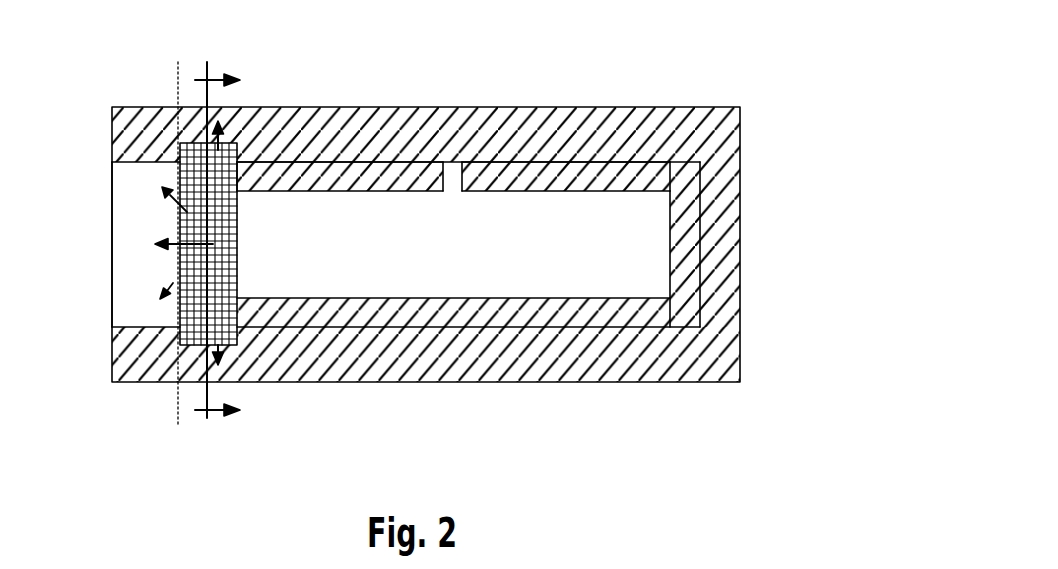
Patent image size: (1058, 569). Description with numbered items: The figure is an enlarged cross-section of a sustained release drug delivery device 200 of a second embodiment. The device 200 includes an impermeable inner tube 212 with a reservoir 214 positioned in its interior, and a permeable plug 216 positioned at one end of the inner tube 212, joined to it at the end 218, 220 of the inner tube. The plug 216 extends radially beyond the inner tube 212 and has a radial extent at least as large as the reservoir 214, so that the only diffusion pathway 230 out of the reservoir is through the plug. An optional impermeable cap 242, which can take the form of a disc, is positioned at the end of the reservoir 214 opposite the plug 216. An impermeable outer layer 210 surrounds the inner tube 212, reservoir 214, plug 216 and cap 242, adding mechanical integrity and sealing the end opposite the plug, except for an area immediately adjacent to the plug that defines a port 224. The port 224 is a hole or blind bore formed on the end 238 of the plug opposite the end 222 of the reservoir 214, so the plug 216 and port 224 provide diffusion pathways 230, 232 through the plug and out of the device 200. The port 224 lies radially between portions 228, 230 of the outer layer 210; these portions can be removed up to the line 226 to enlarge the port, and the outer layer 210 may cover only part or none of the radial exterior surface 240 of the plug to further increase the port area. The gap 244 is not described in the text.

The device 200 is at (756, 72).
The impermeable outer layer 210 is at (640, 138).
The impermeable inner tube 212 is at (542, 175).
The reservoir 214 is at (633, 235).
The permeable plug 216 is at (219, 143).
The end of the inner tube 218 is at (294, 160).
The end of the inner tube 220 is at (233, 347).
The end of reservoir 222 is at (237, 210).
The port 224 is at (141, 302).
The line 226 is at (178, 425).
The portion of outer layer 228 is at (141, 357).
The diffusion pathway 230 is at (141, 132).
The diffusion pathway 232 is at (173, 257).
The end of the plug 238 is at (176, 177).
The radial exterior surface of plug 240 is at (198, 143).
The impermeable cap 242 is at (687, 298).
The opening 244 is at (460, 174).